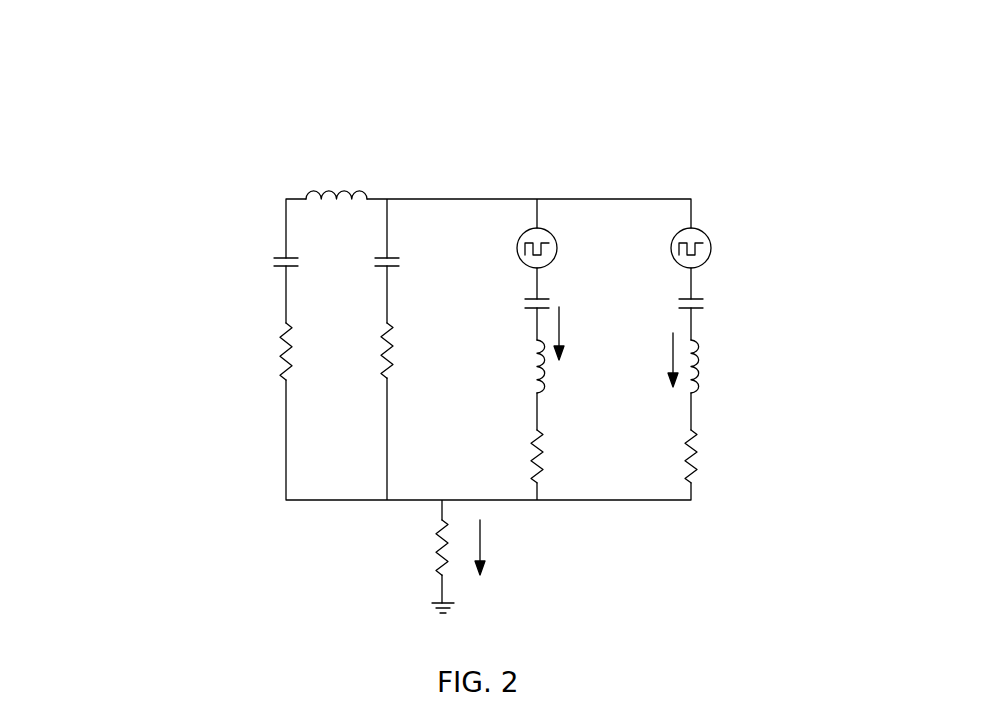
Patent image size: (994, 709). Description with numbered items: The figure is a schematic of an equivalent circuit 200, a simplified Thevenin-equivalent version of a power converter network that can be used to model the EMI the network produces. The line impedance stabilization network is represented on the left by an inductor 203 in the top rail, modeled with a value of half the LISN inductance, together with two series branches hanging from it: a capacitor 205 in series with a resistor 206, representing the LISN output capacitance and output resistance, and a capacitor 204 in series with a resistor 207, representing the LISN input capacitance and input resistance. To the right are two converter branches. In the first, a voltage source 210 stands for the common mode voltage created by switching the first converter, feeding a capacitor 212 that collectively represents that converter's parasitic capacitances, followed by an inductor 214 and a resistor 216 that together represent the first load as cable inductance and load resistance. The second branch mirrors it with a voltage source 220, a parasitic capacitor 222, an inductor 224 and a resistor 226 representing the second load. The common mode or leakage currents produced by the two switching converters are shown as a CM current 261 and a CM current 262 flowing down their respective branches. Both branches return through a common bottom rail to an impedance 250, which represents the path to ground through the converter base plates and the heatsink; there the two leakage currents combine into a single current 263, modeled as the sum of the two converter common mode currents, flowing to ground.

The equivalent circuit 200 is at (92, 152).
The inductor 203 is at (303, 197).
The capacitor 204 is at (380, 257).
The capacitor 205 is at (277, 257).
The resistor 206 is at (285, 379).
The resistor 207 is at (385, 321).
The voltage source 210 is at (517, 248).
The capacitor 212 is at (525, 298).
The inductor 214 is at (536, 338).
The resistor 216 is at (537, 430).
The voltage source 220 is at (709, 231).
The capacitor 222 is at (680, 298).
The inductor 224 is at (698, 341).
The resistor 226 is at (690, 430).
The impedance 250 is at (440, 512).
The CM current 261 is at (587, 288).
The CM current 262 is at (672, 333).
The current 263 is at (482, 533).